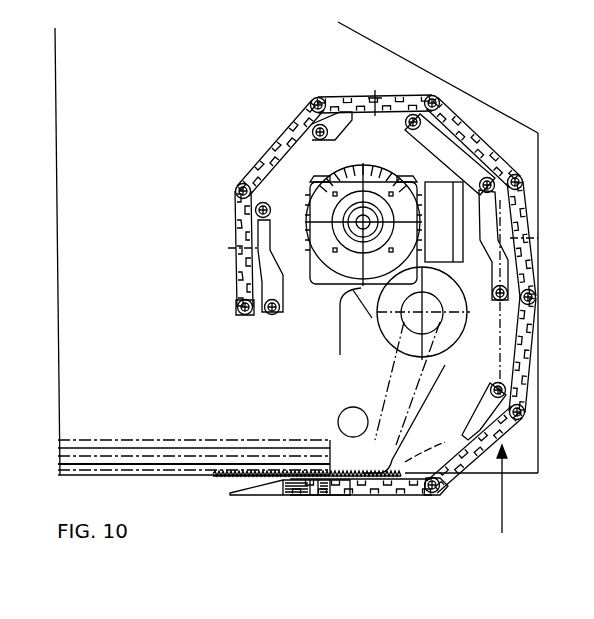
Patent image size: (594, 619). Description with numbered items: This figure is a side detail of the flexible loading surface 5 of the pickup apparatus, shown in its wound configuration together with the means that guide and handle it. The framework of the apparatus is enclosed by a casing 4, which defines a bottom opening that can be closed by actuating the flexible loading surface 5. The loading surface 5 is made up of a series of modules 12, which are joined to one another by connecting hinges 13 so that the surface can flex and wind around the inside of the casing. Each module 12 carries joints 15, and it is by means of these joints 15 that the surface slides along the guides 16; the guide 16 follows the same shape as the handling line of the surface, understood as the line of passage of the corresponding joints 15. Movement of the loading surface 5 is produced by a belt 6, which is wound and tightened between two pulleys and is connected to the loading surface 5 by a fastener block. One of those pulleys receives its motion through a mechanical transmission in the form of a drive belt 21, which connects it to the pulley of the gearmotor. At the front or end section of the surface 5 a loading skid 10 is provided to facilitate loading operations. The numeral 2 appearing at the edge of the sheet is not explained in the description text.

The device 2 is at (566, 303).
The casing 4 is at (395, 53).
The flexible loading surface 5 is at (500, 504).
The belt 6 is at (210, 473).
The loading skid 10 is at (258, 497).
The module 12 is at (258, 152).
The connecting hinge 13 is at (437, 487).
The joint 15 is at (245, 217).
The guide 16 is at (137, 447).
The drive belt 21 is at (342, 343).